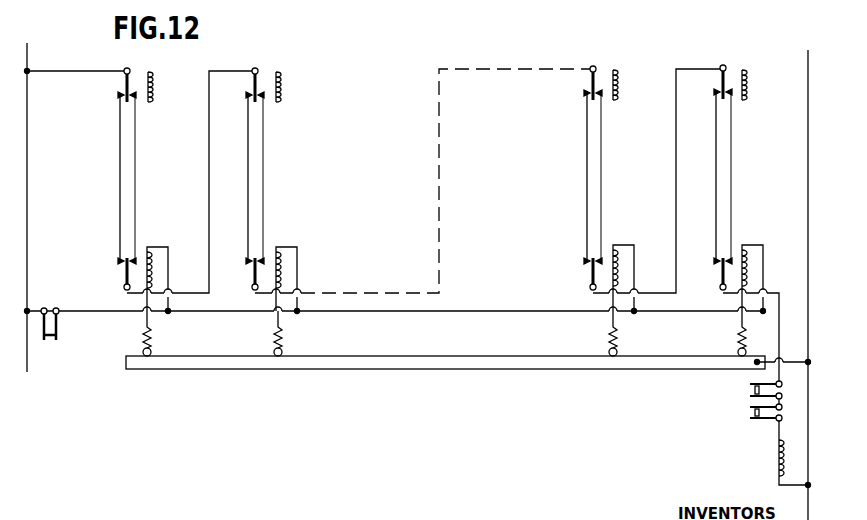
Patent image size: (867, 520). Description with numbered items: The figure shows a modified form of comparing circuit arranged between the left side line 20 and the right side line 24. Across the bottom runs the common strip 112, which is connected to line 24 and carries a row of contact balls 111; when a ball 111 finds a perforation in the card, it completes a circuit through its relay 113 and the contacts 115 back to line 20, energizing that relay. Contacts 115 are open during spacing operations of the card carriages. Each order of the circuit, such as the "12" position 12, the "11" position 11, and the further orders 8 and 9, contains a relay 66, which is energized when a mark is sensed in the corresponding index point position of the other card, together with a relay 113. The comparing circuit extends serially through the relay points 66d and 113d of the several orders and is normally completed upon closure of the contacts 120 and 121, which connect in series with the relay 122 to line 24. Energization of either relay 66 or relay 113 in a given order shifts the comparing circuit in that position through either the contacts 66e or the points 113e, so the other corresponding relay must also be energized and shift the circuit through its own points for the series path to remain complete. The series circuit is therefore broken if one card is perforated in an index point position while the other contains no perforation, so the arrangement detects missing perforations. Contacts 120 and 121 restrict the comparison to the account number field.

The relay 8 is at (653, 175).
The relay 9 is at (728, 60).
The "11" index point position 11 is at (419, 177).
The "12" index point position 12 is at (141, 168).
The line 20 is at (27, 153).
The line 24 is at (808, 168).
The relay 66 is at (156, 87).
The relay points 66d is at (118, 90).
The contacts 66e is at (133, 96).
The contact balls 111 is at (267, 353).
The common strip 112 is at (212, 363).
The relay 113 is at (145, 278).
The relay points 113d is at (120, 265).
The points 113e is at (133, 262).
The contacts 115 is at (48, 338).
The contacts 120 is at (750, 389).
The contacts 121 is at (750, 413).
The relay 122 is at (777, 459).